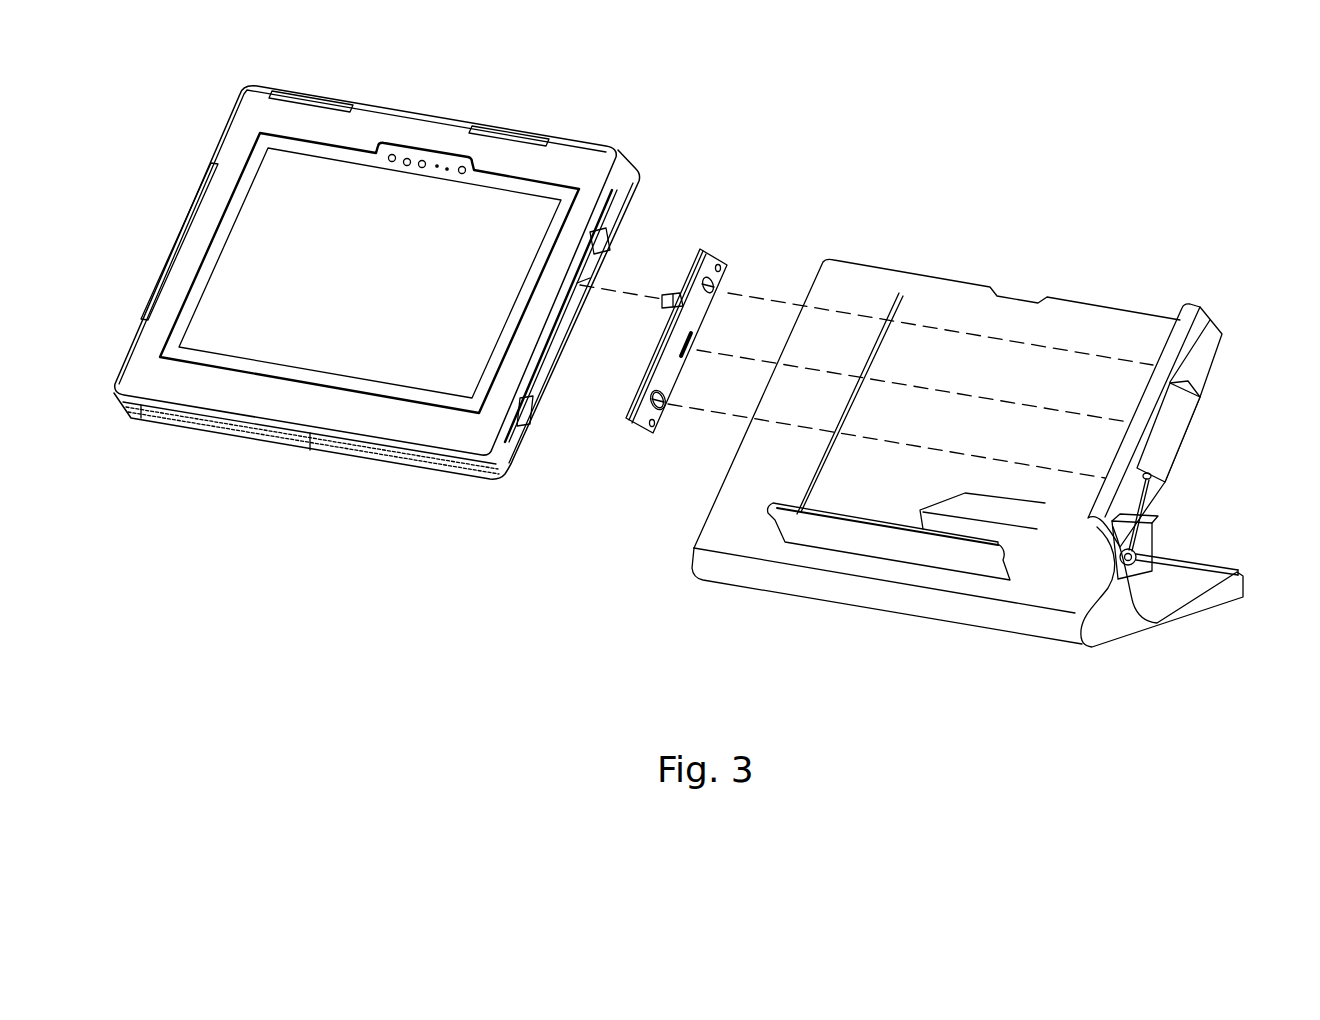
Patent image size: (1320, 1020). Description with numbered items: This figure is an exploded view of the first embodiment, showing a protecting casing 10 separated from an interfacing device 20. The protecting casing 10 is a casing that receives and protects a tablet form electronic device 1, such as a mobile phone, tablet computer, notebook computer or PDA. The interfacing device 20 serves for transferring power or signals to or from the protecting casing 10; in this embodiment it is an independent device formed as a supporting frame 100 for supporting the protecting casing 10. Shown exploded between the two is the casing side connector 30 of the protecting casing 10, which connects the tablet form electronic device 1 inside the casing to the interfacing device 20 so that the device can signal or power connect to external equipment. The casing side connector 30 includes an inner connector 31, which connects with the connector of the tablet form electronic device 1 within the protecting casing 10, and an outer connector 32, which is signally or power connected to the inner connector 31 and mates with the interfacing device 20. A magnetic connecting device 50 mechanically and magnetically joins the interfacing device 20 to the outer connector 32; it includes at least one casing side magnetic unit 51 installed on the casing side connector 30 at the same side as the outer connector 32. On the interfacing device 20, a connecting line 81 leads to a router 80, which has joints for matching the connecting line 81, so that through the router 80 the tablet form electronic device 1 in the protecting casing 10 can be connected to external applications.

The tablet form electronic device 1 is at (268, 253).
The protecting casing 10 is at (222, 142).
The interfacing device 20 is at (992, 455).
The casing side connector 30 is at (713, 313).
The inner connector 31 is at (677, 295).
The outer connector 32 is at (697, 339).
The magnetic connecting device 50 is at (667, 397).
The casing side magnetic unit 51 is at (712, 285).
The router 80 is at (1152, 538).
The connecting line 81 is at (1190, 600).
The supporting frame 100 is at (1138, 313).